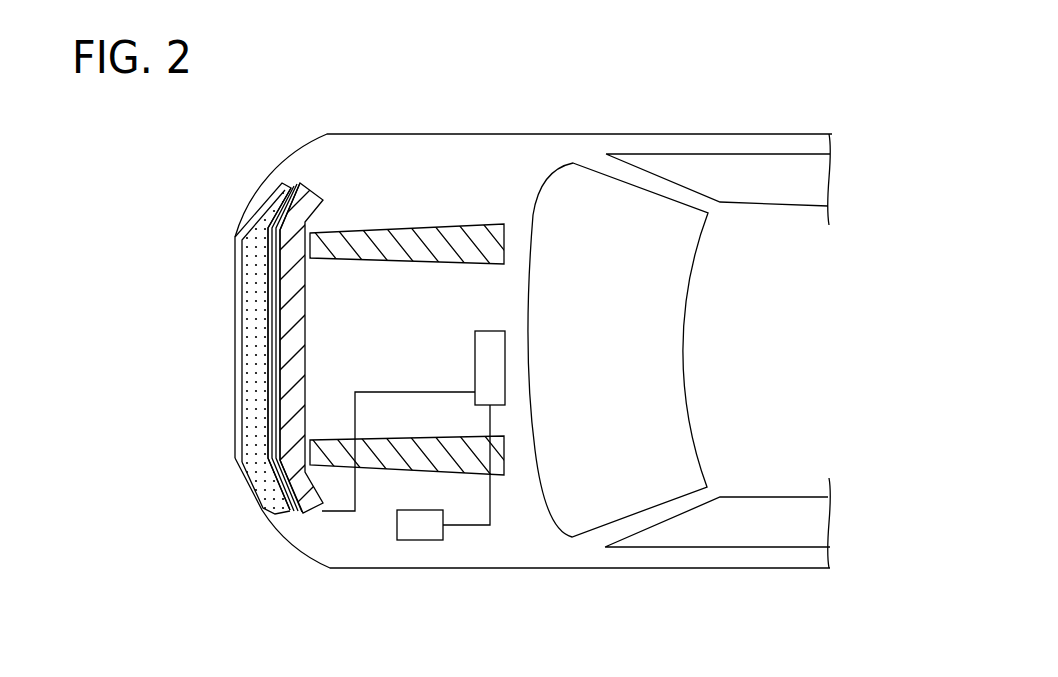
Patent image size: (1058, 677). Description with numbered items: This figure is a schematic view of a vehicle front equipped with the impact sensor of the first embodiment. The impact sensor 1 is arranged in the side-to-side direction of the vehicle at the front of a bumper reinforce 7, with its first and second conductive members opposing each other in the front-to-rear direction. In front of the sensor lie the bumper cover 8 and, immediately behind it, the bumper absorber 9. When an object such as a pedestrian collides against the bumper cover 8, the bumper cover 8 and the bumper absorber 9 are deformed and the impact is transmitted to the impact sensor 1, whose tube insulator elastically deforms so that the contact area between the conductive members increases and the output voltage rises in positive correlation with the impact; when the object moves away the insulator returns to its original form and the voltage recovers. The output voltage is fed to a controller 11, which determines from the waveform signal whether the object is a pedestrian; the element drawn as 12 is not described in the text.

The impact sensor 1 is at (254, 350).
The bumper reinforce 7 is at (288, 500).
The bumper cover 8 is at (287, 540).
The bumper absorber 9 is at (252, 424).
The controller 11 is at (492, 340).
The power supply 12 is at (423, 537).